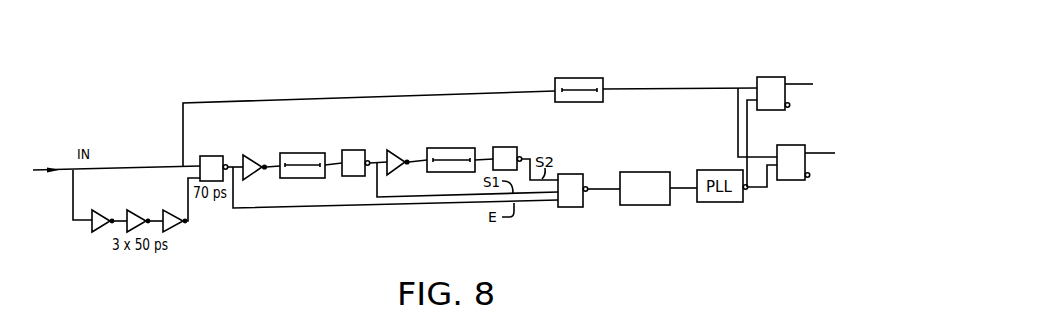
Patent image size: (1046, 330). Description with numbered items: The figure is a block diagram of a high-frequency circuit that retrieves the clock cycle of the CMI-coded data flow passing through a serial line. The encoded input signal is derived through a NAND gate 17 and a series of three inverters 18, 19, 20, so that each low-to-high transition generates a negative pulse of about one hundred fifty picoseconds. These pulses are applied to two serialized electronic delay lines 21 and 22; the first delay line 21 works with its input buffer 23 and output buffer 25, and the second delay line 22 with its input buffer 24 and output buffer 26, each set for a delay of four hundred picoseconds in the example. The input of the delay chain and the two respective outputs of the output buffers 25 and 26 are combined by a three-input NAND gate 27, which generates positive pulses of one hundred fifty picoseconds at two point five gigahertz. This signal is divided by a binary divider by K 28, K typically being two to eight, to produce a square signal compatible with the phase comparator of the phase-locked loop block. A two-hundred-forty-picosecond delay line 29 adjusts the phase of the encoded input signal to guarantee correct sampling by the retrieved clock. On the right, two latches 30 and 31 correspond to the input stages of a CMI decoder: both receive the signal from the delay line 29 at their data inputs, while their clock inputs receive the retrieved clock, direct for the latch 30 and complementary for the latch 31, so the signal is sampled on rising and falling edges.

The NAND gate 17 is at (214, 156).
The inverter 18 is at (104, 211).
The inverter 19 is at (141, 211).
The inverter 20 is at (174, 211).
The delay line 21 is at (306, 153).
The delay line 22 is at (447, 148).
The input buffer 23 is at (253, 155).
The input buffer 24 is at (397, 153).
The output buffer 25 is at (354, 150).
The output buffer 26 is at (503, 147).
The NAND gate 27 is at (575, 174).
The binary divider by K 28 is at (655, 172).
The delay line 29 is at (588, 78).
The latch 30 is at (767, 77).
The latch 31 is at (790, 145).